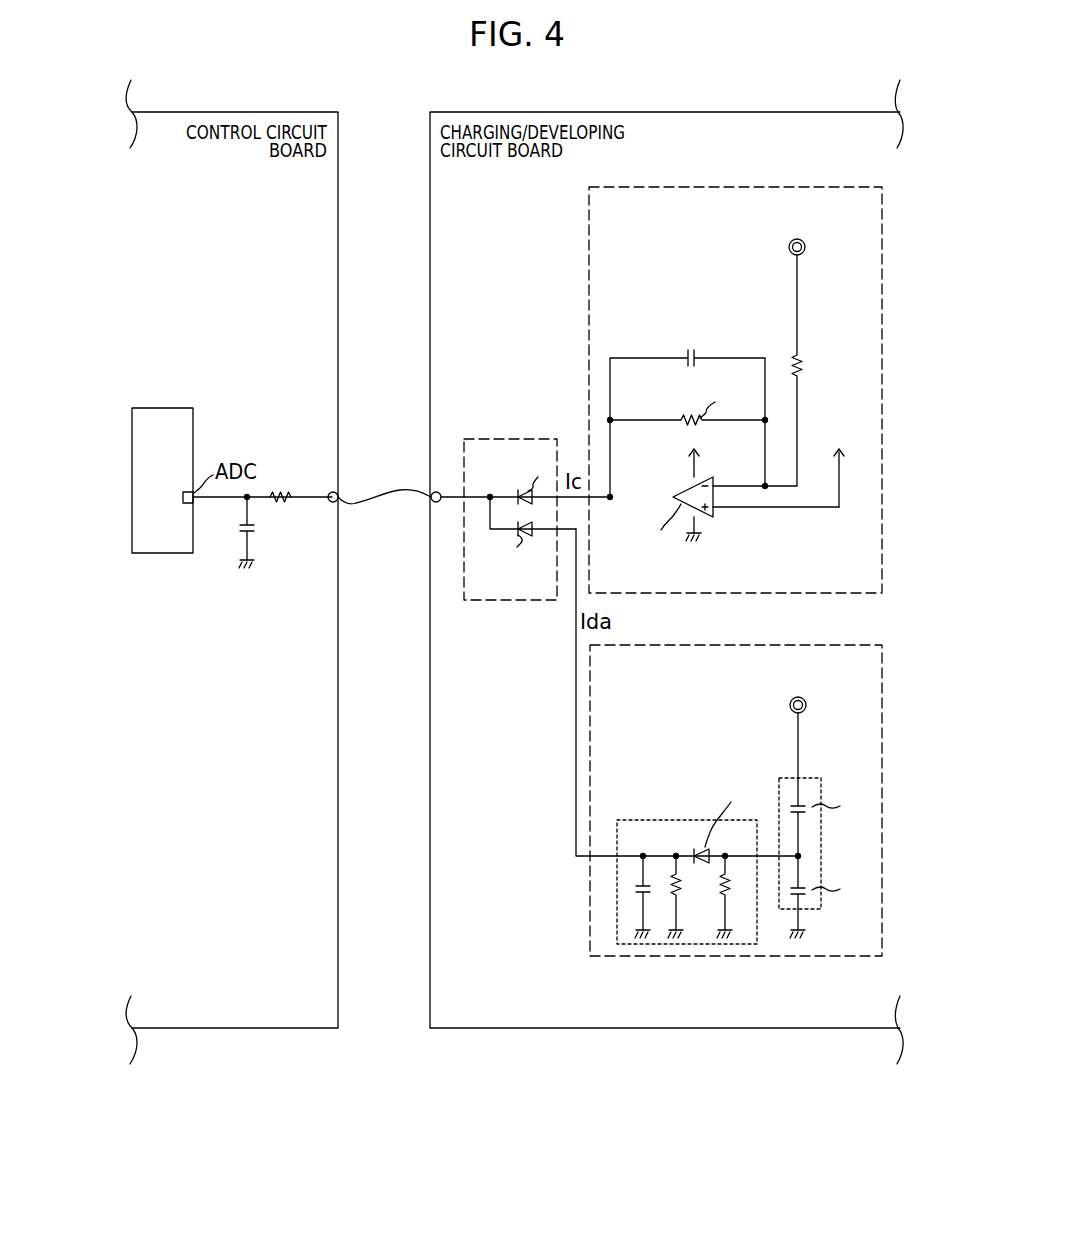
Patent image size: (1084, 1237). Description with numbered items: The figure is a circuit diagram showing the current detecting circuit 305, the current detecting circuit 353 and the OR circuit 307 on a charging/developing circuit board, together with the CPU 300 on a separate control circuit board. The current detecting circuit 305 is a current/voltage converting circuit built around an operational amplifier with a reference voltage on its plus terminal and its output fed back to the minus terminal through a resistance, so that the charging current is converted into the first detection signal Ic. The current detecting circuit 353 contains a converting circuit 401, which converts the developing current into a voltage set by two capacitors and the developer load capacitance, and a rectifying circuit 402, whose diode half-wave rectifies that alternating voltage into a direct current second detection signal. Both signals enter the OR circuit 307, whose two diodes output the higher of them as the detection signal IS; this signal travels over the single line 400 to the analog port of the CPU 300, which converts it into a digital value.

The CPU 300 is at (158, 408).
The current detecting circuit 305 is at (645, 187).
The OR circuit 307 is at (520, 439).
The current detecting circuit 353 is at (736, 779).
The signal line 400 is at (373, 505).
The converting circuit 401 is at (810, 778).
The rectifying circuit 402 is at (657, 820).